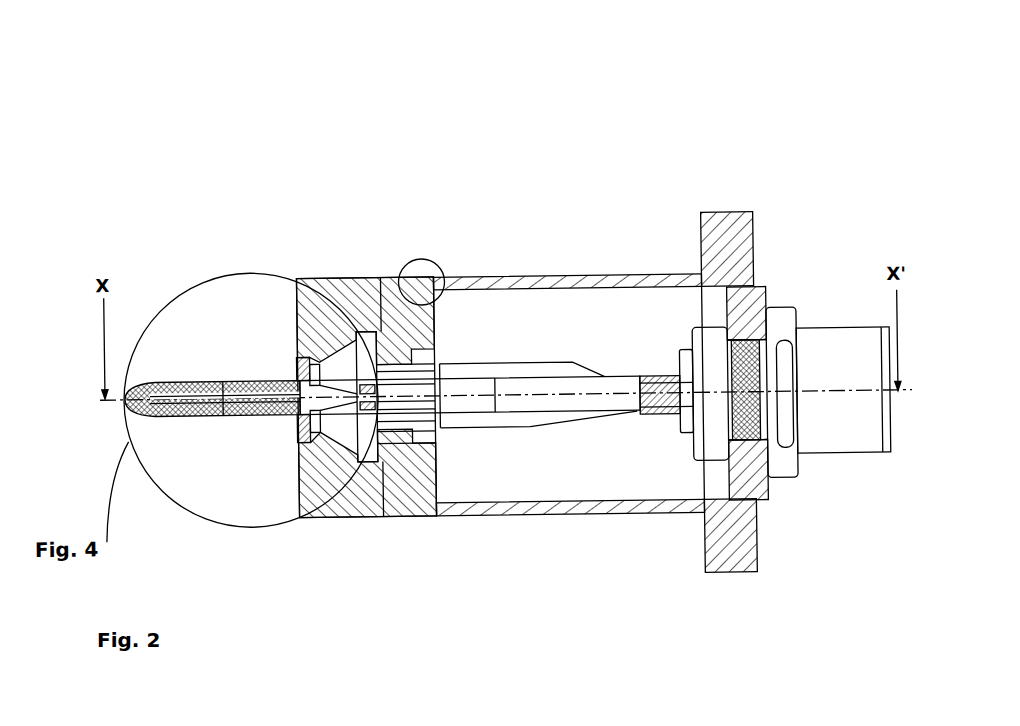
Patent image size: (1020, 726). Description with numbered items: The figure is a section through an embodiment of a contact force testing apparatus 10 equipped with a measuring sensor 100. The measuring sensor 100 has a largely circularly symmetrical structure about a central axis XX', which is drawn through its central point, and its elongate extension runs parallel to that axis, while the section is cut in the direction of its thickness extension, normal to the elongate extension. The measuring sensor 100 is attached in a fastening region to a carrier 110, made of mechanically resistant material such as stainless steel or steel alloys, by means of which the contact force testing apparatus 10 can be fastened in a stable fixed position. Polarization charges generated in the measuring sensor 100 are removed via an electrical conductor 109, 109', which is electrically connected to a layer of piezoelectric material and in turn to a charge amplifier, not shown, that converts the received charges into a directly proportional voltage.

The contact force testing apparatus 10 is at (472, 148).
The measuring sensor 100 is at (195, 254).
The carrier 110 is at (350, 276).
The electrical conductor 109 is at (538, 316).
The electrical conductor 109' is at (471, 485).